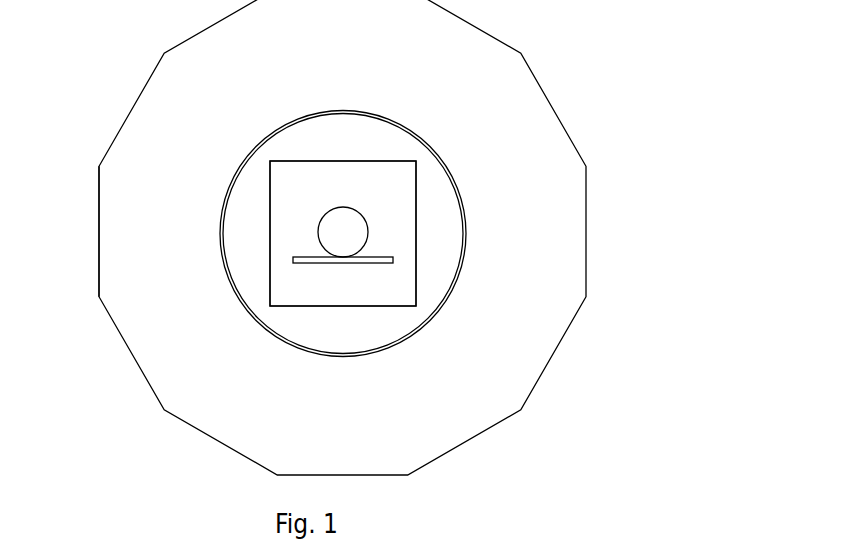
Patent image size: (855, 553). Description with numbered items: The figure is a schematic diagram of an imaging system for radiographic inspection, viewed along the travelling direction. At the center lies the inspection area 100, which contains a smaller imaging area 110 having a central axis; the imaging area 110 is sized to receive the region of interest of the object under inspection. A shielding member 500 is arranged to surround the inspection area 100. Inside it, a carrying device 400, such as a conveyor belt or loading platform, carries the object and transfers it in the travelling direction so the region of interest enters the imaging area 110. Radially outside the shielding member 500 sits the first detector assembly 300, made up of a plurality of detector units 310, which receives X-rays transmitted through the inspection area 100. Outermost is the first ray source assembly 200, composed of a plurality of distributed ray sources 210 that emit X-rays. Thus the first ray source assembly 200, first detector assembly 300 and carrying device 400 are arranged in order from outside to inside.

The inspection area 100 is at (397, 224).
The imaging area 110 is at (345, 217).
The first ray source assembly 200 is at (130, 87).
The distributed ray source 210 is at (100, 235).
The first detector assembly 300 is at (343, 105).
The detector unit 310 is at (245, 158).
The carrying device 400 is at (340, 258).
The shielding member 500 is at (415, 195).